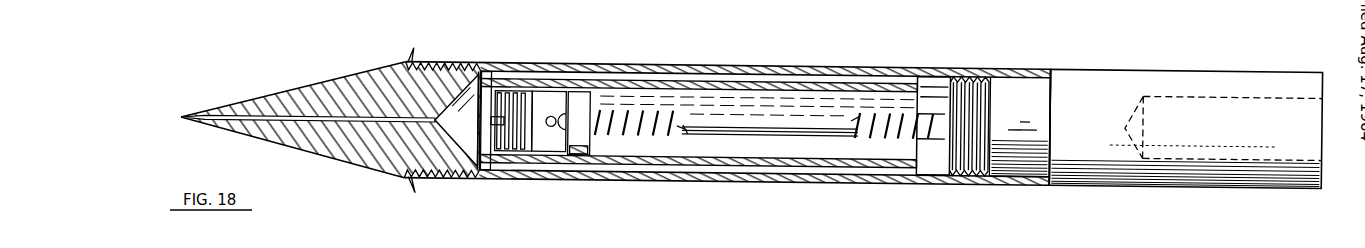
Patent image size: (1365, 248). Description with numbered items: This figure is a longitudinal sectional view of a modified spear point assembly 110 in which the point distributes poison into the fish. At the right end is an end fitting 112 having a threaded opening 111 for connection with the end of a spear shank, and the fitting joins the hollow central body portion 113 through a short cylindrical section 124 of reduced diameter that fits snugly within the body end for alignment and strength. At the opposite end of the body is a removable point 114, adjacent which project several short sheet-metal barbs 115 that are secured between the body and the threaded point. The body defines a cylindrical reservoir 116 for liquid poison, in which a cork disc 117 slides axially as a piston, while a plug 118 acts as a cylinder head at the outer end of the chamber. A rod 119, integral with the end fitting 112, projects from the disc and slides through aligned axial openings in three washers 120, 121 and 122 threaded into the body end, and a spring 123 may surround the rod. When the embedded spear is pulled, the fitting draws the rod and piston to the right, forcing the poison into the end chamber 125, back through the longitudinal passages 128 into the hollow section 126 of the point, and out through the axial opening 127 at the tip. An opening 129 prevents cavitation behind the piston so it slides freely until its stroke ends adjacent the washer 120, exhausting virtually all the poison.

The spear point assembly 110 is at (717, 190).
The threaded opening 111 is at (1197, 98).
The end fitting 112 is at (1217, 83).
The central body portion 113 is at (644, 182).
The removable point 114 is at (367, 69).
The barbs 115 is at (417, 192).
The cylindrical reservoir 116 is at (798, 148).
The disc 117 is at (580, 147).
The plug 118 is at (509, 158).
The rod 119 is at (838, 127).
The washer 120 is at (947, 166).
The washer 121 is at (962, 175).
The washer 122 is at (988, 176).
The spring 123 is at (631, 110).
The short cylindrical section 124 is at (1007, 95).
The end chamber 125 is at (934, 96).
The hollow section 126 is at (467, 142).
The axial opening 127 is at (286, 114).
The longitudinal passages 128 is at (747, 82).
The opening 129 is at (550, 111).